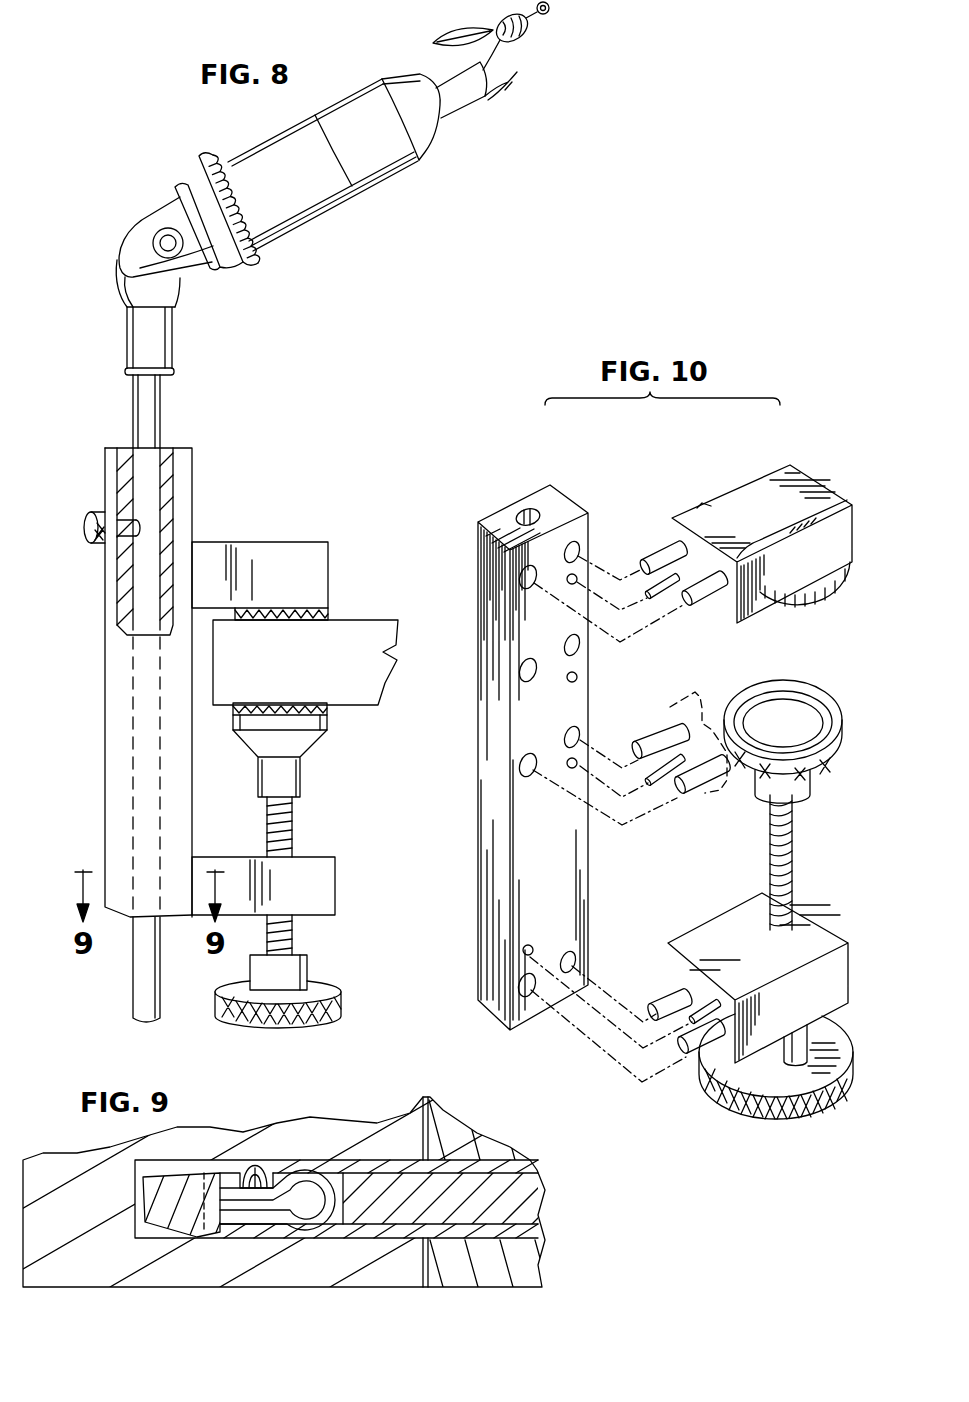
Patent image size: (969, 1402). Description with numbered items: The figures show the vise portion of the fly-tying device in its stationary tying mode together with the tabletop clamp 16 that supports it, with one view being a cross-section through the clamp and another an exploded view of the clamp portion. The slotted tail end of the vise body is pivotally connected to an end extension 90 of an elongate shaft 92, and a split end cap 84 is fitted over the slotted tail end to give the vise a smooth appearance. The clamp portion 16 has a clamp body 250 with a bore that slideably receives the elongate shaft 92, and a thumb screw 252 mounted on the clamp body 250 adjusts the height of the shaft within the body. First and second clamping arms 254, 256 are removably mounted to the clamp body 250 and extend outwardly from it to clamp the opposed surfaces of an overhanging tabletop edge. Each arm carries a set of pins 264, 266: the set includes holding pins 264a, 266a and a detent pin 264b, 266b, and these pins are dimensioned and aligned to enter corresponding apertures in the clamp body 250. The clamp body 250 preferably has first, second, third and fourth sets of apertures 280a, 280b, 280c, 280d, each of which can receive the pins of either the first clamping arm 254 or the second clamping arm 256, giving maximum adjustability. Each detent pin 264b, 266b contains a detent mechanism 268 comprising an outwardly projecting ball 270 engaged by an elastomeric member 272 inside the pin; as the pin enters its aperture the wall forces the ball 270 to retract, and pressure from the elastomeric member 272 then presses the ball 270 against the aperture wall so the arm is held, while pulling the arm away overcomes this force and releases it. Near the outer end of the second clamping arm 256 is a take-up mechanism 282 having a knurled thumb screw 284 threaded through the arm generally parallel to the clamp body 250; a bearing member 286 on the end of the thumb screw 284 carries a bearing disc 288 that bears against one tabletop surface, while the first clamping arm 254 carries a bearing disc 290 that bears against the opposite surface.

In FIG. 8, the tabletop clamp 16 is at (96, 766).
In FIG. 8, the split end cap 84 is at (153, 217).
In FIG. 8, the end extension 90 is at (172, 292).
In FIG. 8, the elongate shaft 92 is at (155, 392).
In FIG. 8, the clamp body 250 is at (112, 705).
In FIG. 8, the thumb screw 252 is at (103, 512).
In FIG. 8, the first clamping arm 254 is at (275, 548).
In FIG. 8, the second clamping arm 256 is at (316, 865).
In FIG. 10, the set of pins 264 is at (660, 560).
In FIG. 10, the holding pins 264a is at (700, 606).
In FIG. 10, the detent pin 264b is at (650, 603).
In FIG. 10, the set of pins 266 is at (688, 1058).
In FIG. 10, the holding pins 266a is at (657, 1000).
In FIG. 10, the detent pin 266b is at (710, 1018).
In FIG. 9, the detent mechanism 268 is at (274, 1180).
In FIG. 9, the ball 270 is at (245, 1170).
In FIG. 9, the elastomeric member 272 is at (333, 1190).
In FIG. 10, the first set of apertures 280a is at (519, 580).
In FIG. 10, the second set of apertures 280b is at (520, 677).
In FIG. 10, the third set of apertures 280c is at (520, 771).
In FIG. 10, the fourth set of apertures 280d is at (518, 985).
In FIG. 8, the take-up mechanism 282 is at (204, 977).
In FIG. 10, the take-up mechanism 282 is at (872, 872).
In FIG. 8, the knurled thumb screw 284 is at (322, 992).
In FIG. 10, the knurled thumb screw 284 is at (737, 1104).
In FIG. 8, the bearing member 286 is at (305, 742).
In FIG. 10, the bearing member 286 is at (810, 780).
In FIG. 8, the bearing disc 288 is at (325, 712).
In FIG. 10, the bearing disc 288 is at (790, 686).
In FIG. 8, the bearing disc 290 is at (325, 612).
In FIG. 10, the bearing disc 290 is at (783, 612).